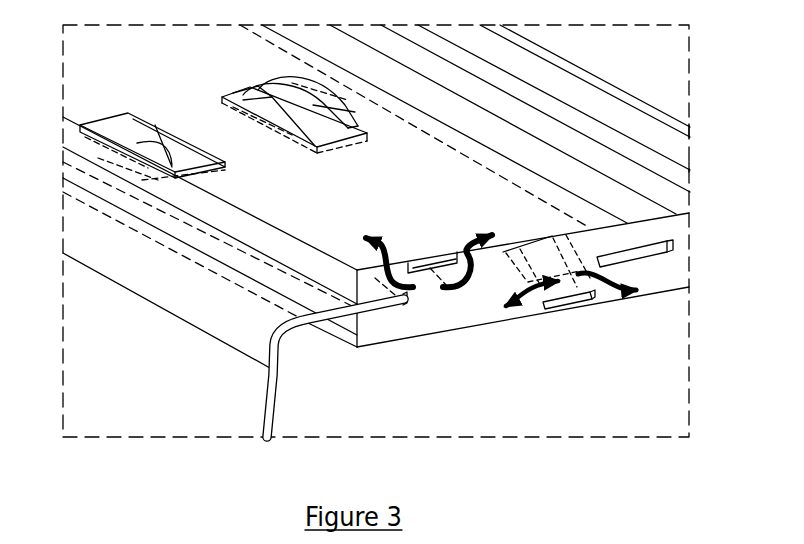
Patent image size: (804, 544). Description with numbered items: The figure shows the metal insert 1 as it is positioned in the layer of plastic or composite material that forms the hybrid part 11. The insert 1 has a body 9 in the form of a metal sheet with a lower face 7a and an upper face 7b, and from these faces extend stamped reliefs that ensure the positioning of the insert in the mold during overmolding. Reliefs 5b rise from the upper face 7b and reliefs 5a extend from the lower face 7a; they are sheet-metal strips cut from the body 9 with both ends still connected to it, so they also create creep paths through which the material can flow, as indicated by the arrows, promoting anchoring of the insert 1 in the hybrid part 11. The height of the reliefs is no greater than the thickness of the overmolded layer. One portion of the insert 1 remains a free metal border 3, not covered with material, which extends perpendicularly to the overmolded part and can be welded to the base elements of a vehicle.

The insert 1 is at (291, 359).
The metal border 3 is at (233, 408).
The relief 5a is at (140, 128).
The relief 5b is at (348, 108).
The lower face 7a is at (383, 311).
The upper face 7b is at (628, 250).
The body 9 is at (345, 209).
The hybrid part 11 is at (597, 347).